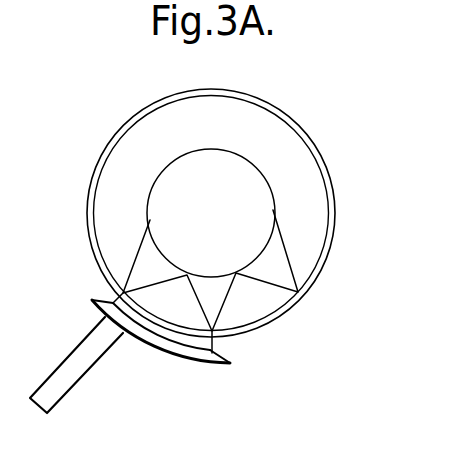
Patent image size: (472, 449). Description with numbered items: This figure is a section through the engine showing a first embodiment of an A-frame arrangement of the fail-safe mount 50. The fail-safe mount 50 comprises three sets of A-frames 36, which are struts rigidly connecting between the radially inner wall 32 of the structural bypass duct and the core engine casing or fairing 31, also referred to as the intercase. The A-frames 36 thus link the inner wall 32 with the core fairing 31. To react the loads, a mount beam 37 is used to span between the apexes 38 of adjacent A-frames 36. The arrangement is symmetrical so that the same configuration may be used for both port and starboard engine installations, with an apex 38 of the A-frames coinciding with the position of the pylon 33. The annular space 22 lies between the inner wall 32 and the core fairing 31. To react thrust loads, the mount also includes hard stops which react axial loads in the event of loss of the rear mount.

The fail-safe mount 50 is at (96, 126).
The radially inner wall 32 is at (289, 118).
The interior opening 22 is at (169, 155).
The core engine casing 31 is at (268, 180).
The A-frames 36 is at (141, 243).
The apexes 38 is at (122, 293).
The mount beam 37 is at (212, 357).
The pylon 33 is at (68, 377).